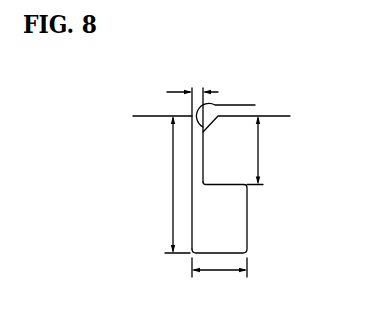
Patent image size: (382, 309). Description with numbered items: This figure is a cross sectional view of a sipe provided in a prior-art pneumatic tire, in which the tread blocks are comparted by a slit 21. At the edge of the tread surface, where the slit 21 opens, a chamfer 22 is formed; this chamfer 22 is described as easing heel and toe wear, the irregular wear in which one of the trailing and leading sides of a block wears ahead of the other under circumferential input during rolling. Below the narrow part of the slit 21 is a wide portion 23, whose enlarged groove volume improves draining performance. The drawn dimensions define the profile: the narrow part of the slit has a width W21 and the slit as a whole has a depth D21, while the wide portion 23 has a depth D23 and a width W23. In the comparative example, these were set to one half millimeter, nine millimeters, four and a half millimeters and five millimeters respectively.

The slit 21 is at (193, 144).
The chamfer 22 is at (271, 96).
The wide portion 23 is at (238, 222).
The width of slit W21 is at (193, 79).
The depth of slit D21 is at (161, 184).
The depth of wide portion D23 is at (279, 150).
The width of wide portion W23 is at (219, 280).